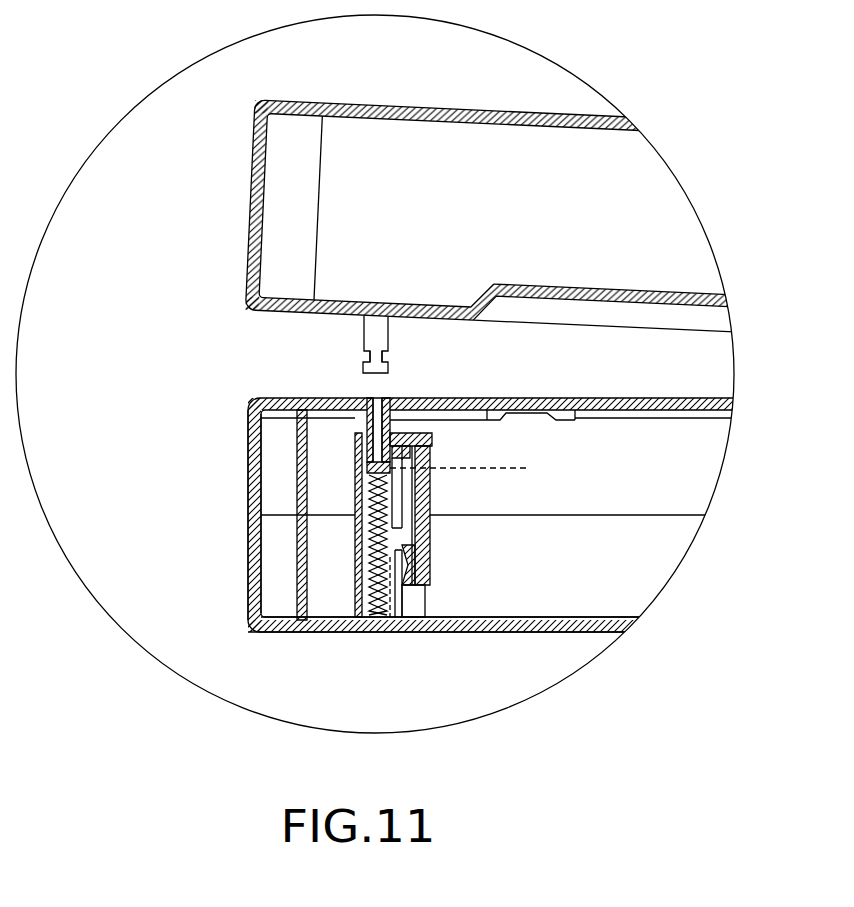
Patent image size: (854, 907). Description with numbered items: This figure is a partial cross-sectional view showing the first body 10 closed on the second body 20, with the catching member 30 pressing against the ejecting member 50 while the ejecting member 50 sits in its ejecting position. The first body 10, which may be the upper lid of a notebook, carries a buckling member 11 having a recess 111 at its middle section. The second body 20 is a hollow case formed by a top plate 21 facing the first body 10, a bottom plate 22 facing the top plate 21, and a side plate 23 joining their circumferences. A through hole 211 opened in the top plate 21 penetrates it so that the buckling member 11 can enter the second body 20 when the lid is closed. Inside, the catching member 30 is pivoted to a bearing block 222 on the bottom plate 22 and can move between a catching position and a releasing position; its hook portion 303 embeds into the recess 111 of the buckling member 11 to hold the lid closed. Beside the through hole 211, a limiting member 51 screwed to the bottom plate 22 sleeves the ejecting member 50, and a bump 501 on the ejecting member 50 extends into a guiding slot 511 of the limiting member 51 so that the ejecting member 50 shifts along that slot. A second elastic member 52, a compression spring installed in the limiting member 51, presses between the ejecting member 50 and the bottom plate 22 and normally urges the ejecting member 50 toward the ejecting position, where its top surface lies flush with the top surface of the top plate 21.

The first body 10 is at (371, 95).
The buckling member 11 is at (365, 337).
The recess 111 is at (384, 362).
The second body 20 is at (243, 396).
The top plate 21 is at (350, 399).
The through hole 211 is at (378, 398).
The bottom plate 22 is at (558, 623).
The bearing block 222 is at (420, 562).
The side plate 23 is at (249, 593).
The catching member 30 is at (442, 434).
The hook portion 303 is at (398, 437).
The ejecting member 50 is at (352, 423).
The bump 501 is at (430, 468).
The limiting member 51 is at (400, 518).
The guiding slot 511 is at (402, 545).
The second elastic member 52 is at (391, 598).